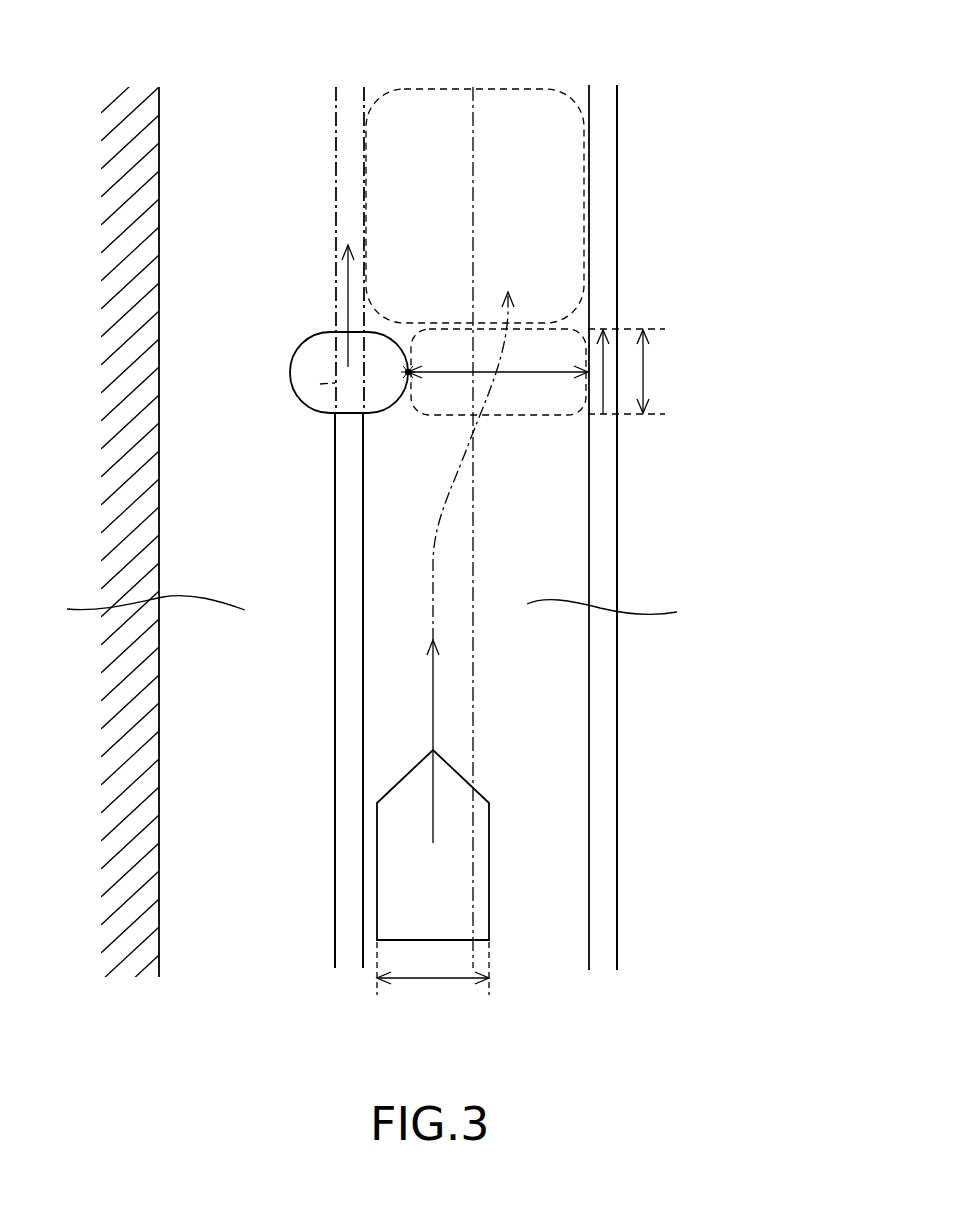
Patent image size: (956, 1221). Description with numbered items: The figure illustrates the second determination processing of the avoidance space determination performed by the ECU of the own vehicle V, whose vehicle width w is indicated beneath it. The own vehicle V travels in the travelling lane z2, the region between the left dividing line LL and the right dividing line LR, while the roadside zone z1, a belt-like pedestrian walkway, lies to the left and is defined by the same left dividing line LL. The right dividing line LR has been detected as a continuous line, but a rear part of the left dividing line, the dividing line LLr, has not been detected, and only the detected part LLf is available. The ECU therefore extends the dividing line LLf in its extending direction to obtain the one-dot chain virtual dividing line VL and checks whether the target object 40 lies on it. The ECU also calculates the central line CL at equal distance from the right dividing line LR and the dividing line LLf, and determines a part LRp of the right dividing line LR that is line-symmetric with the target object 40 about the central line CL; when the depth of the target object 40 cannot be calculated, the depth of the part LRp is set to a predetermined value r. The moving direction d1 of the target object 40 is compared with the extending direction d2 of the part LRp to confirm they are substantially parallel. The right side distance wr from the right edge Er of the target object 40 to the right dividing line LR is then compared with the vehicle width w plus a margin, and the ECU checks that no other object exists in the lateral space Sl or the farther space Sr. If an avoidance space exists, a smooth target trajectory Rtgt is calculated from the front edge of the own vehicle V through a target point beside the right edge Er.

The left dividing line LL is at (340, 122).
The undetected part of left dividing line LLr is at (345, 181).
The detected part of left dividing line LLf is at (345, 563).
The central line CL is at (473, 137).
The right dividing line LR is at (600, 171).
The part of right dividing line LRp is at (612, 403).
The space on farther side Sr is at (585, 208).
The space on lateral side Sl is at (567, 329).
The target object 40 is at (302, 372).
The virtual dividing line VL is at (335, 385).
The moving direction of target object d1 is at (348, 300).
The right edge of target object Er is at (407, 370).
The right side distance wr is at (518, 375).
The target extending direction d2 is at (602, 350).
The predetermined value r is at (647, 371).
The target trajectory Rtgt is at (455, 500).
The own vehicle V is at (398, 870).
The vehicle width w is at (433, 976).
The roadside zone z1 is at (141, 608).
The travelling lane z2 is at (619, 611).